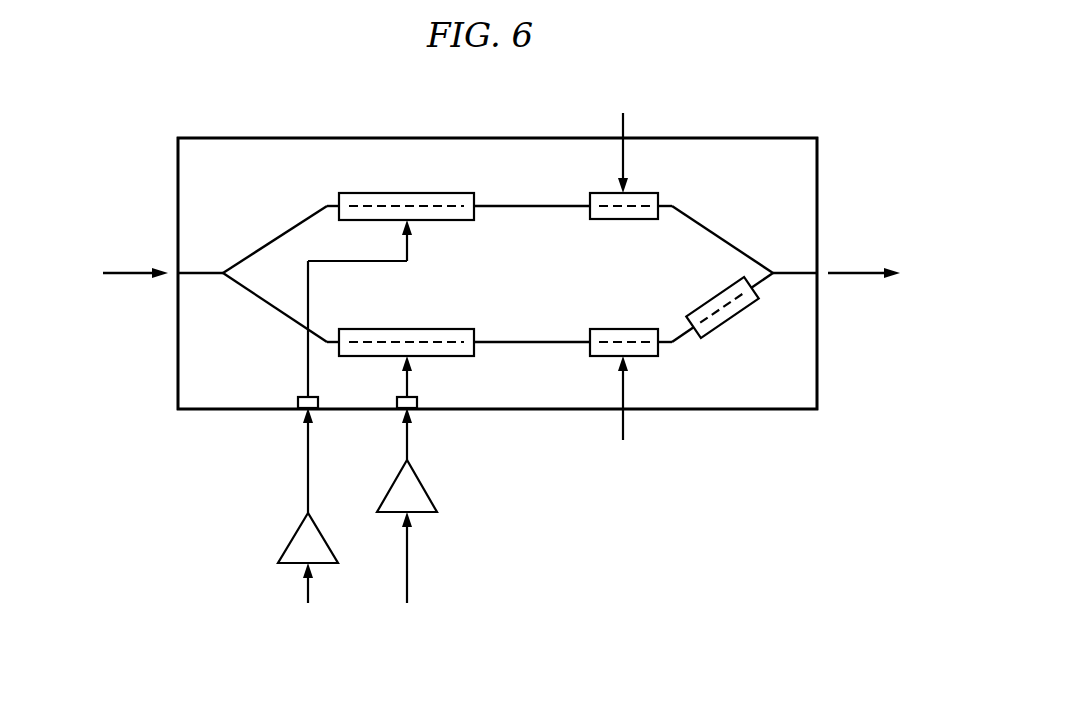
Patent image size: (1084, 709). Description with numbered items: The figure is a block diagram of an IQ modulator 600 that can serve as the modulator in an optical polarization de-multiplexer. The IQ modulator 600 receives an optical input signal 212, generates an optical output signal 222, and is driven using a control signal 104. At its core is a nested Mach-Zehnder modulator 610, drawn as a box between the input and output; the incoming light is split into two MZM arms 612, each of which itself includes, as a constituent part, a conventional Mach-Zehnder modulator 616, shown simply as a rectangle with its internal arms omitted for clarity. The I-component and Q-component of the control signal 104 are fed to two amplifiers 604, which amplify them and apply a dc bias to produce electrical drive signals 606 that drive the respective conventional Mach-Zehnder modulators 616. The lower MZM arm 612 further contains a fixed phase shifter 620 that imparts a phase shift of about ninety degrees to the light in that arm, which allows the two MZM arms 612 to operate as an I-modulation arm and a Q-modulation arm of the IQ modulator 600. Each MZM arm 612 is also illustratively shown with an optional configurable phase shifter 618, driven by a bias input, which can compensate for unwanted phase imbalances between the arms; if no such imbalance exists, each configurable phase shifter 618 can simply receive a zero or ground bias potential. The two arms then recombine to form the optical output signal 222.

The IQ modulator 600 is at (503, 91).
The nested Mach-Zehnder modulator 610 is at (752, 138).
The optical signal 212 is at (135, 278).
The optical output signal 222 is at (862, 278).
The MZM arm 612 is at (233, 366).
The conventional Mach-Zehnder modulator 616 is at (408, 193).
The configurable phase shifter 618 is at (640, 193).
The fixed phase shifter 620 is at (726, 328).
The electrical drive signal 606 is at (437, 445).
The amplifier 604 is at (450, 483).
The control signal 104 is at (433, 606).